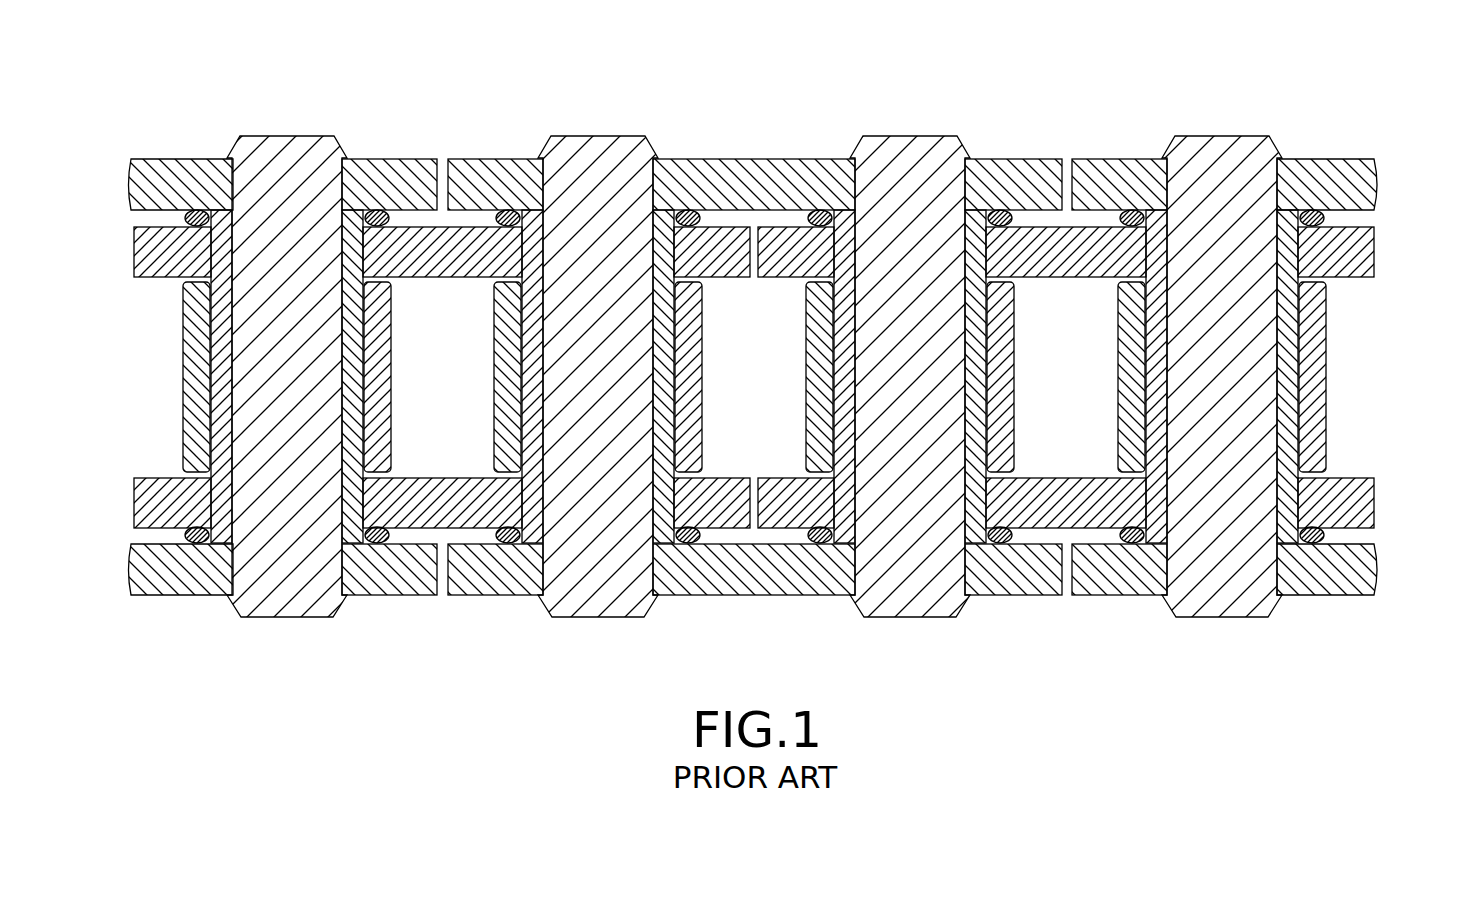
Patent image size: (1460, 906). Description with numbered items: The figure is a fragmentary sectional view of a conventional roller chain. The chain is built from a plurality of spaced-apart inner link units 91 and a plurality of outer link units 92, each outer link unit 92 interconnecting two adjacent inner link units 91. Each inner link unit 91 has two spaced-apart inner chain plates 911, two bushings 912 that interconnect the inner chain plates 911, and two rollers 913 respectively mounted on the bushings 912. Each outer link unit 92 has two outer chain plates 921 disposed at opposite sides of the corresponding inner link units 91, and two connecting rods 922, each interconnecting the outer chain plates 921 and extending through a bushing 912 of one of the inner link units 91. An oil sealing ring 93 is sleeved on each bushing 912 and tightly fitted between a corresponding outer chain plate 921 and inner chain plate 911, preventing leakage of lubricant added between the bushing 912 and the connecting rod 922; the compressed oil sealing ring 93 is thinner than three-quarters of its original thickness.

The inner link unit 91 is at (767, 363).
The inner chain plate 911 is at (723, 247).
The bushing 912 is at (222, 240).
The roller 913 is at (188, 292).
The outer link unit 92 is at (743, 347).
The outer chain plate 921 is at (522, 178).
The connecting rod 922 is at (598, 175).
The oil sealing ring 93 is at (497, 212).